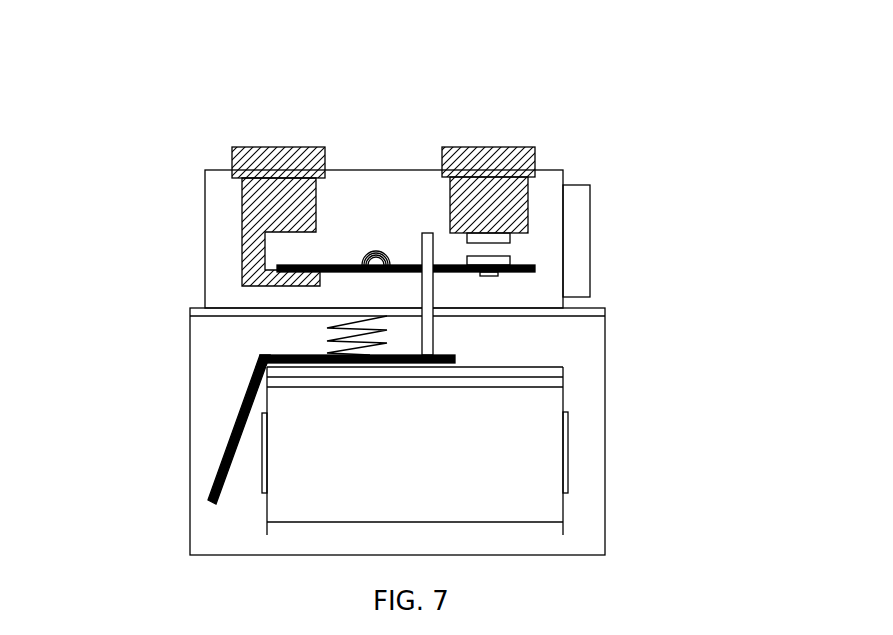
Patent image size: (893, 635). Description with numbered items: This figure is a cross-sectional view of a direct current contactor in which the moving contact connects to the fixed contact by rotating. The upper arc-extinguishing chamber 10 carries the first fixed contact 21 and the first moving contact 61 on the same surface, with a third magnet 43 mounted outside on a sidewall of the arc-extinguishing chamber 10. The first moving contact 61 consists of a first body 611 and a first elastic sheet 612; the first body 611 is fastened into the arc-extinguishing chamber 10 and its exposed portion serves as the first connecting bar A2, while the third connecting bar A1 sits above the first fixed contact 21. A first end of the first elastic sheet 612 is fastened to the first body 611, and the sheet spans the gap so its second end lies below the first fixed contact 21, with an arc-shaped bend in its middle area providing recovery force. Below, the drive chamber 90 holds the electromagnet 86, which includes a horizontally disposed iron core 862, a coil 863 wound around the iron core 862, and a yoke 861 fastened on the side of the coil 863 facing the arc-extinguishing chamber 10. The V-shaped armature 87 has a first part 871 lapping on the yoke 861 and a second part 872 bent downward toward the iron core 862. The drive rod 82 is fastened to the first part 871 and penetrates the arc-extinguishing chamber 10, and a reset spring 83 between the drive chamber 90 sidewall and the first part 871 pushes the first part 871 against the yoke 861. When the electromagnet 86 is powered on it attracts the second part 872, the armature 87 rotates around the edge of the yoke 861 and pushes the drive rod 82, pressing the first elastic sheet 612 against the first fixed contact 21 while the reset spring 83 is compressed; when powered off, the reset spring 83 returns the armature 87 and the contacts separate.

The arc-extinguishing chamber 10 is at (225, 222).
The third magnet 43 is at (577, 198).
The first fixed contact 21 is at (505, 210).
The third connecting bar A1 is at (483, 148).
The first connecting bar A2 is at (277, 155).
The first moving contact 61 is at (433, 58).
The first body 611 is at (305, 195).
The first elastic sheet 612 is at (405, 265).
The drive rod 82 is at (433, 295).
The reset spring 83 is at (355, 352).
The armature 87 is at (103, 300).
The first part 871 is at (263, 352).
The second part 872 is at (245, 413).
The drive chamber 90 is at (218, 520).
The electromagnet 86 is at (725, 465).
The yoke 861 is at (563, 367).
The iron core 862 is at (568, 425).
The coil 863 is at (537, 460).